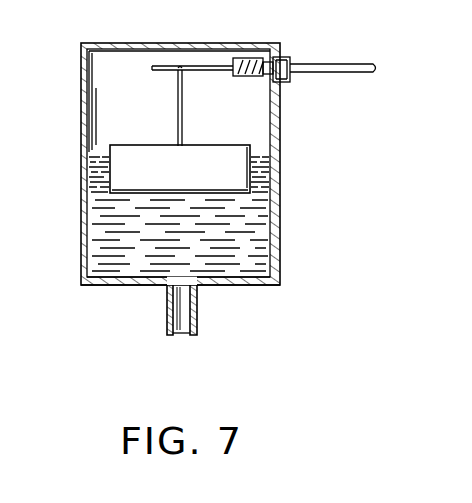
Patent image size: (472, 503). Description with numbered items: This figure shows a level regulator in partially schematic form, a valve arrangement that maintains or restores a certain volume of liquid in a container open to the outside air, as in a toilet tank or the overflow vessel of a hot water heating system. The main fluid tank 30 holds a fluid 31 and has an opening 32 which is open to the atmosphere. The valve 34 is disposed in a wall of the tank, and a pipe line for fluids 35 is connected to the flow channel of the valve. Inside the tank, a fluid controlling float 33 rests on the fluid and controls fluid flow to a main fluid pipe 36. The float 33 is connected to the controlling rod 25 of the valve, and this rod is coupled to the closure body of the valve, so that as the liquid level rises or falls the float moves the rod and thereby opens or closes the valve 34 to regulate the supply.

The controlling rod 25 is at (206, 66).
The main fluid tank 30 is at (278, 250).
The fluid 31 is at (250, 227).
The opening 32 is at (101, 43).
The fluid controlling float 33 is at (128, 168).
The valve 34 is at (270, 68).
The pipe line for fluids 35 is at (340, 62).
The main fluid pipe 36 is at (170, 313).